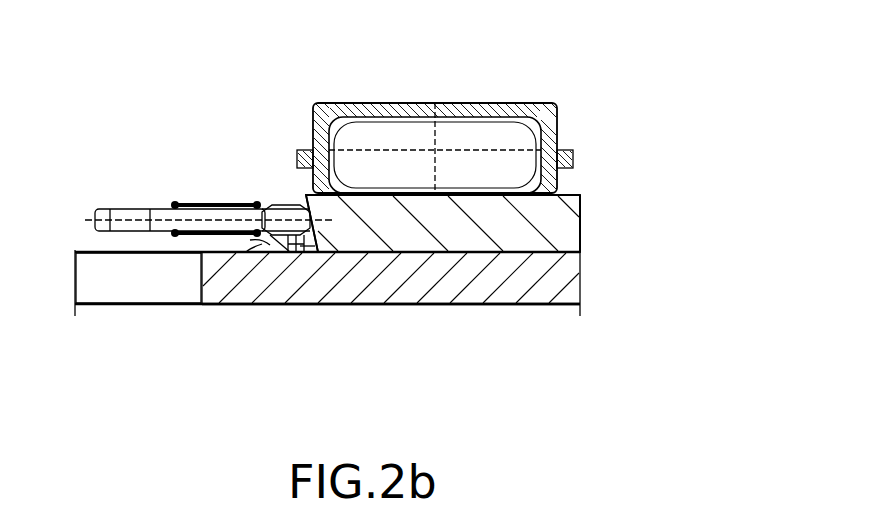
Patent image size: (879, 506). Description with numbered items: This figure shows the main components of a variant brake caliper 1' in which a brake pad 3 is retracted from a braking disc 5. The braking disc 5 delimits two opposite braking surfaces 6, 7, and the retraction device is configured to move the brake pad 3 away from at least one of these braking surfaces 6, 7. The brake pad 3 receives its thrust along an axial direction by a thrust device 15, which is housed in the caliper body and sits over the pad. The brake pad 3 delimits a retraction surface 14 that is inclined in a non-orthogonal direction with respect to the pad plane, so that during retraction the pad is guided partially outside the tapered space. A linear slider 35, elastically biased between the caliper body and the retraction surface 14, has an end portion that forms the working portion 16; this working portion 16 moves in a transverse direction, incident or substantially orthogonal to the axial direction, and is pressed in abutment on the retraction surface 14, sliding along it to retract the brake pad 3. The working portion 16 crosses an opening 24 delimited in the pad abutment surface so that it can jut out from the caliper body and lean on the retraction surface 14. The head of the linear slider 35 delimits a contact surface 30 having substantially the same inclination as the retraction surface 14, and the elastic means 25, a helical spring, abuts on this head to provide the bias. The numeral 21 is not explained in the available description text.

The brake pad 3 is at (471, 236).
The braking disc 5 is at (424, 291).
The braking surface 6 is at (565, 250).
The braking surface 7 is at (338, 305).
The retraction surface 14 is at (280, 195).
The thrust device 15 is at (478, 100).
The working portion 16 is at (228, 170).
The bond region 21 is at (272, 260).
The opening 24 is at (301, 262).
The elastic means 25 is at (195, 188).
The contact surface 30 is at (312, 207).
The linear slider 35 is at (185, 305).
The brake caliper 1' is at (704, 482).